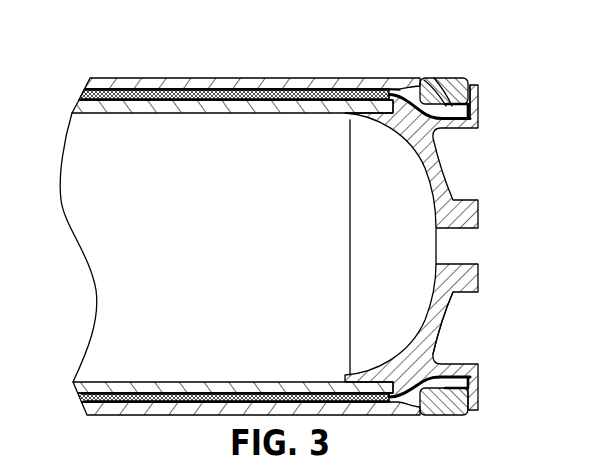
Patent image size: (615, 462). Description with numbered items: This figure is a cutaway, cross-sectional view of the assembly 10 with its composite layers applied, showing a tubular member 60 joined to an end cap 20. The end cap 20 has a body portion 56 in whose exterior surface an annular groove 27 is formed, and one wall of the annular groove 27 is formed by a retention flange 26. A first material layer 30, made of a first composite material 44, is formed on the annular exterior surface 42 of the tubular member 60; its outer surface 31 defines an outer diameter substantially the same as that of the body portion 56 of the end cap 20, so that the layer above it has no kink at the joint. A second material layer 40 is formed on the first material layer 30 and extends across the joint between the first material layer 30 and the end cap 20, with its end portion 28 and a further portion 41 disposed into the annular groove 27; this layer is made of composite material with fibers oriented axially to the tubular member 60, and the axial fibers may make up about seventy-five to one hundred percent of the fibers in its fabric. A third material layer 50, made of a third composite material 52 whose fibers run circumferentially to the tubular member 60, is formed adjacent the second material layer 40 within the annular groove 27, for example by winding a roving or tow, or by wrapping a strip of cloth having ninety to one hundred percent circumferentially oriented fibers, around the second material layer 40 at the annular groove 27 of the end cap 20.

The container assembly 10 is at (174, 55).
The end cap 20 is at (474, 278).
The retention flange 26 is at (480, 99).
The annular groove 27 is at (447, 128).
The end portion of outer layer 28 is at (379, 84).
The first material layer 30 is at (163, 92).
The outer surface of intermediate layer 31 is at (197, 86).
The second material layer 40 is at (248, 87).
The end portion of intermediate layer in seal groove 41 is at (428, 83).
The annular exterior surface 42 is at (168, 398).
The first composite material 44 is at (88, 92).
The third material layer 50 is at (455, 82).
The third composite material 52 is at (451, 410).
The body portion 56 is at (463, 316).
The tubular member 60 is at (105, 122).